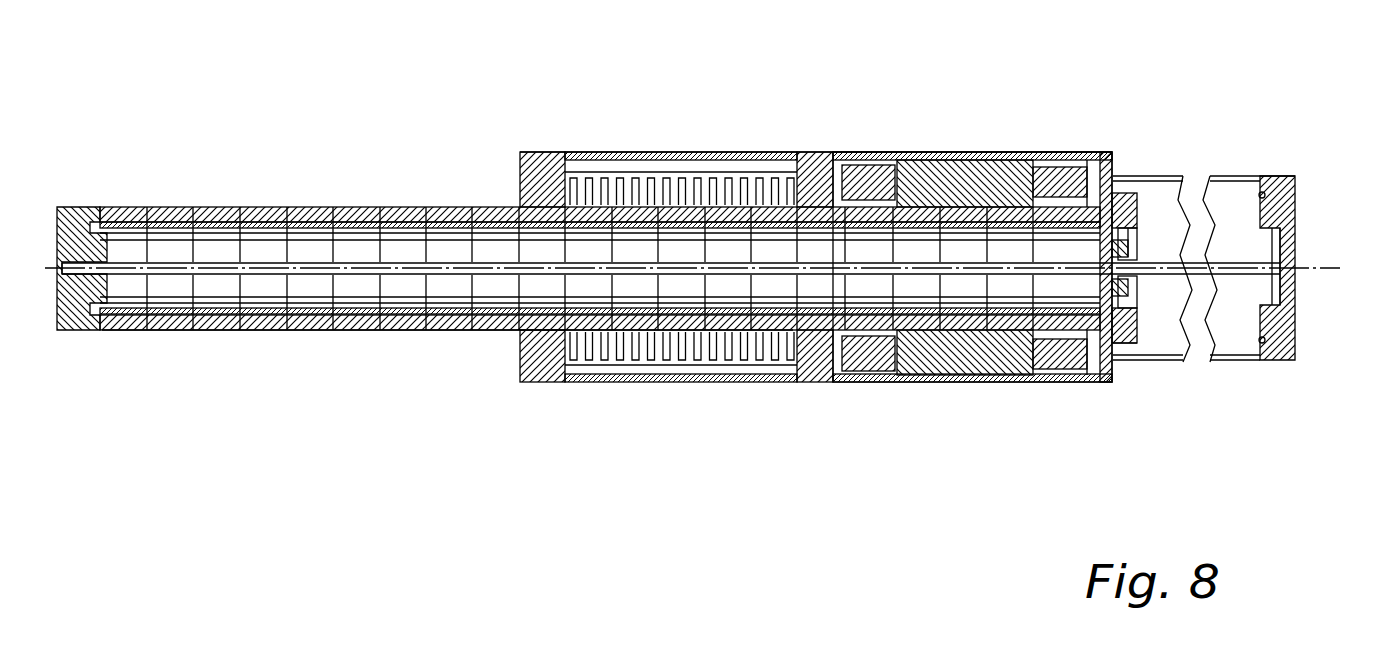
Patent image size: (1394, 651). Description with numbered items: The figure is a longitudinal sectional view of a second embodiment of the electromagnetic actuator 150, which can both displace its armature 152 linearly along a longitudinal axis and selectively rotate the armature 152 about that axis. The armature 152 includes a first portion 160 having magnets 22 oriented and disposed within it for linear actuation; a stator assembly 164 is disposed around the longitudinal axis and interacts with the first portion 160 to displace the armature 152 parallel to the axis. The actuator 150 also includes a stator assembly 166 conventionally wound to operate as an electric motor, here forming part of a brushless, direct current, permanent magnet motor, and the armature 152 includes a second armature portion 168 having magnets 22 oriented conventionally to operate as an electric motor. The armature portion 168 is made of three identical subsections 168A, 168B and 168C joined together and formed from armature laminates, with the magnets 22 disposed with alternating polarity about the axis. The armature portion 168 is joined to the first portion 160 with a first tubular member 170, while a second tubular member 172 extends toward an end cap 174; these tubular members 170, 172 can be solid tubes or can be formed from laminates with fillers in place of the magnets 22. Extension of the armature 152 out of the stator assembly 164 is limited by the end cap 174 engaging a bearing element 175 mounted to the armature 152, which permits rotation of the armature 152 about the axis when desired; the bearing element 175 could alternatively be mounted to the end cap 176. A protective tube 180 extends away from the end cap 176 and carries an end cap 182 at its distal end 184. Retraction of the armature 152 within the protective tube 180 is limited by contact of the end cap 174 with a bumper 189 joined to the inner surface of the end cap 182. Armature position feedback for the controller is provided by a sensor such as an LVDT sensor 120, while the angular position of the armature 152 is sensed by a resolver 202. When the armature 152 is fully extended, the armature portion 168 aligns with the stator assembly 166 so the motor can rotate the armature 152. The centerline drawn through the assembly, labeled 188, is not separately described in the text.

The magnets 22 is at (347, 208).
The LVDT sensor 120 is at (1165, 275).
The electromagnetic actuator 150 is at (816, 98).
The armature 152 is at (448, 186).
The first portion 160 is at (793, 395).
The stator assembly 164 is at (660, 115).
The stator assembly 166 is at (972, 280).
The second armature portion 168 is at (1033, 418).
The subsection 168A is at (915, 377).
The subsection 168B is at (988, 380).
The subsection 168C is at (1012, 372).
The first tubular member 170 is at (837, 152).
The second tubular member 172 is at (1092, 187).
The end cap 174 is at (1137, 203).
The bearing element 175 is at (1115, 343).
The end cap 176 is at (1113, 190).
The protective tube 180 is at (1226, 175).
The end cap 182 is at (1298, 190).
The distal end 184 is at (1284, 156).
The axis 188 is at (1300, 263).
The bumper 189 is at (1258, 335).
The resolver 202 is at (1284, 297).